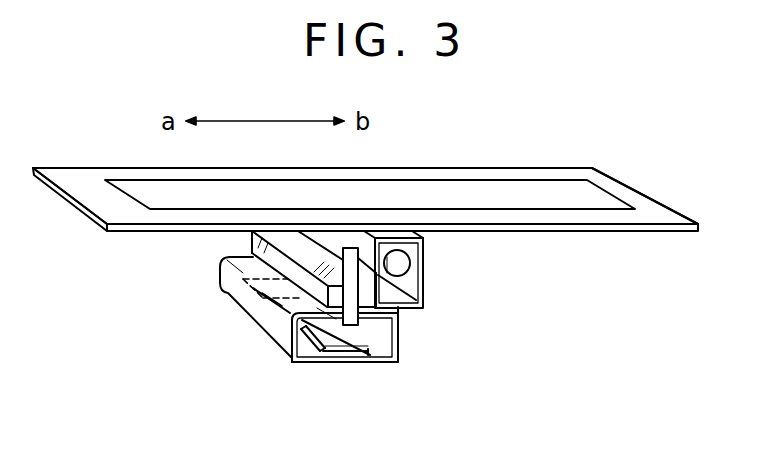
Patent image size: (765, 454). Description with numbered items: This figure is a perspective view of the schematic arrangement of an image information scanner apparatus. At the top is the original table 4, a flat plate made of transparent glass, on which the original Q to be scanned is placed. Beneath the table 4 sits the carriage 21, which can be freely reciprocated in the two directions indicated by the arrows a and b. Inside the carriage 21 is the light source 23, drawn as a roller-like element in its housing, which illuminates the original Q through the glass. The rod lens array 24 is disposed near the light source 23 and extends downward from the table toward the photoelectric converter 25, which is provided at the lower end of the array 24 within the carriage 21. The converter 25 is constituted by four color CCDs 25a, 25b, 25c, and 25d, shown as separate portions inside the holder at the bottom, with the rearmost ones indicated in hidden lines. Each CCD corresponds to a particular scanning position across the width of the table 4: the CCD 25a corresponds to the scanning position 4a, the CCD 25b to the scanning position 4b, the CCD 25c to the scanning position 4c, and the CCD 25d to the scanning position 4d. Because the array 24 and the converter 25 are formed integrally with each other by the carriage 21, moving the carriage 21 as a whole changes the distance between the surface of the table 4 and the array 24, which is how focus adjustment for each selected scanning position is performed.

The original table 4 is at (580, 172).
The scanning position 4a is at (118, 210).
The scanning position 4b is at (647, 208).
The scanning position 4c is at (612, 188).
The scanning position 4d is at (77, 177).
The original Q is at (508, 190).
The carriage 21 is at (206, 258).
The light source 23 is at (403, 264).
The rod lens array 24 is at (350, 247).
The photoelectric converter 25 is at (357, 348).
The color CCD 25a is at (325, 340).
The color CCD 25b is at (308, 320).
The color CCD 25c is at (280, 298).
The color CCD 25d is at (232, 292).